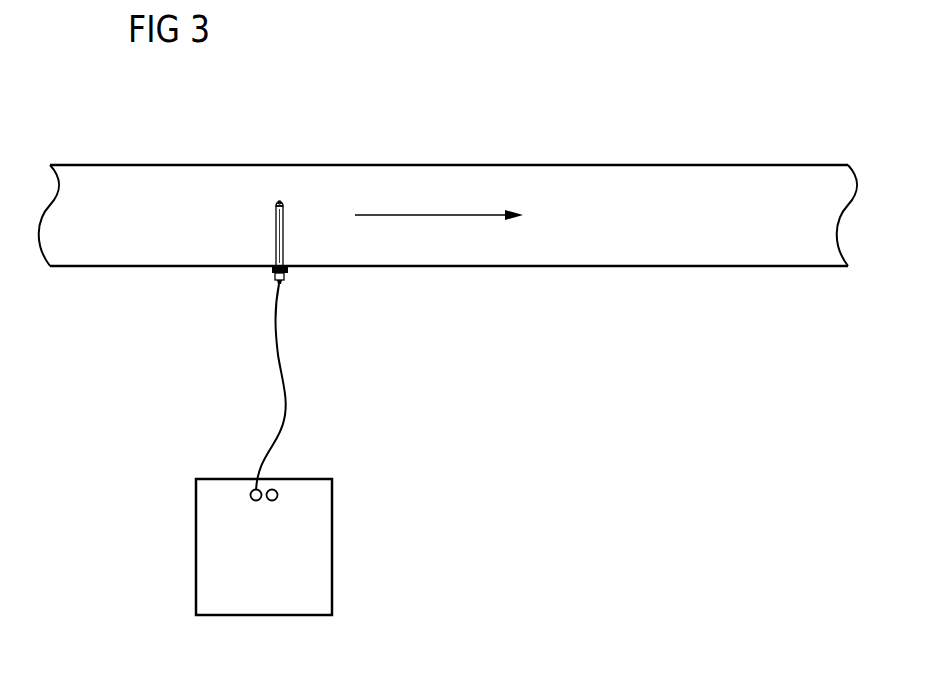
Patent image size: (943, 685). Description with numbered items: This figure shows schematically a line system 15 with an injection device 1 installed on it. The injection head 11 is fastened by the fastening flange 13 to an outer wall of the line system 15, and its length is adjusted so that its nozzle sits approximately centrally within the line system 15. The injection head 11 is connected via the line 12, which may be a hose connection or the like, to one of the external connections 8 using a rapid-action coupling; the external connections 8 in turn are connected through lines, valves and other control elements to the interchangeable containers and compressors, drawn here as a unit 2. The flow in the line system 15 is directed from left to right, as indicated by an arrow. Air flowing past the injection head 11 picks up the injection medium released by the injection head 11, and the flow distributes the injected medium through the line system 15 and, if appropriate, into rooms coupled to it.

The injection device 1 is at (368, 410).
The evaluation unit 2 is at (333, 560).
The external connections 8 is at (250, 495).
The injection head 11 is at (276, 237).
The line 12 is at (279, 370).
The fastening flange 13 is at (272, 268).
The line system 15 is at (583, 165).